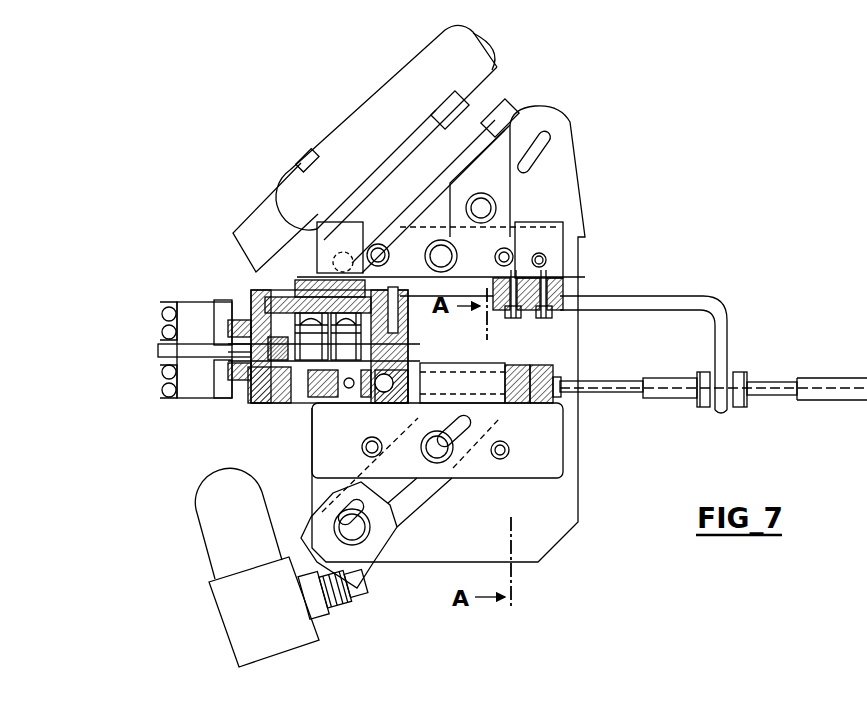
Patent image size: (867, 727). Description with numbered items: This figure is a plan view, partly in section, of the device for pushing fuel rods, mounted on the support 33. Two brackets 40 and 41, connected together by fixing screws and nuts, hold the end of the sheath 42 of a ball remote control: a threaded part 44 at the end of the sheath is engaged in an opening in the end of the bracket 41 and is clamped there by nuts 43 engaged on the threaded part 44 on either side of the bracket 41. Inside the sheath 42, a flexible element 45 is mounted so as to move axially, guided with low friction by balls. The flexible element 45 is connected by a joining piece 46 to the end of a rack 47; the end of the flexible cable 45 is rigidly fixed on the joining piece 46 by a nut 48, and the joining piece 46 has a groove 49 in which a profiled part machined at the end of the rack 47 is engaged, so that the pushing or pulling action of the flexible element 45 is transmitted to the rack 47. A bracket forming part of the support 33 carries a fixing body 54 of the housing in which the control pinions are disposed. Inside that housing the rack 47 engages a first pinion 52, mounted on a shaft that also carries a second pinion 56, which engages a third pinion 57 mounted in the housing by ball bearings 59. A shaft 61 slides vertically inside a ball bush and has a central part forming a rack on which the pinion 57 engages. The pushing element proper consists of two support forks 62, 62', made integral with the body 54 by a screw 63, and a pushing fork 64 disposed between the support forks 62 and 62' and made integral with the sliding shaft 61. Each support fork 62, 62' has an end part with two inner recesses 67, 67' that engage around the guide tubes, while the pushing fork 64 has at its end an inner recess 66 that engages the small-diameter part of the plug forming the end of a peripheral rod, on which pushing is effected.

The support 33 is at (578, 522).
The bracket 40 is at (562, 298).
The bracket 41 is at (722, 312).
The sheath 42 is at (857, 400).
The nuts 43 is at (738, 408).
The threaded part 44 is at (672, 398).
The flexible element 45 is at (617, 392).
The joining piece 46 is at (546, 403).
The rack 47 is at (462, 382).
The nut 48 is at (557, 378).
The groove 49 is at (522, 372).
The first pinion 52 is at (366, 402).
The fixing body 54 is at (272, 228).
The second pinion 56 is at (358, 350).
The third pinion 57 is at (308, 358).
The ball bearings 59 is at (290, 283).
The shaft 61 is at (245, 380).
The support fork 62 is at (208, 299).
The support fork 62' is at (217, 405).
The screw 63 is at (233, 320).
The pushing fork 64 is at (190, 365).
The inner recess 66 is at (158, 350).
The inner recess 67 is at (152, 305).
The inner recess 67' is at (148, 391).